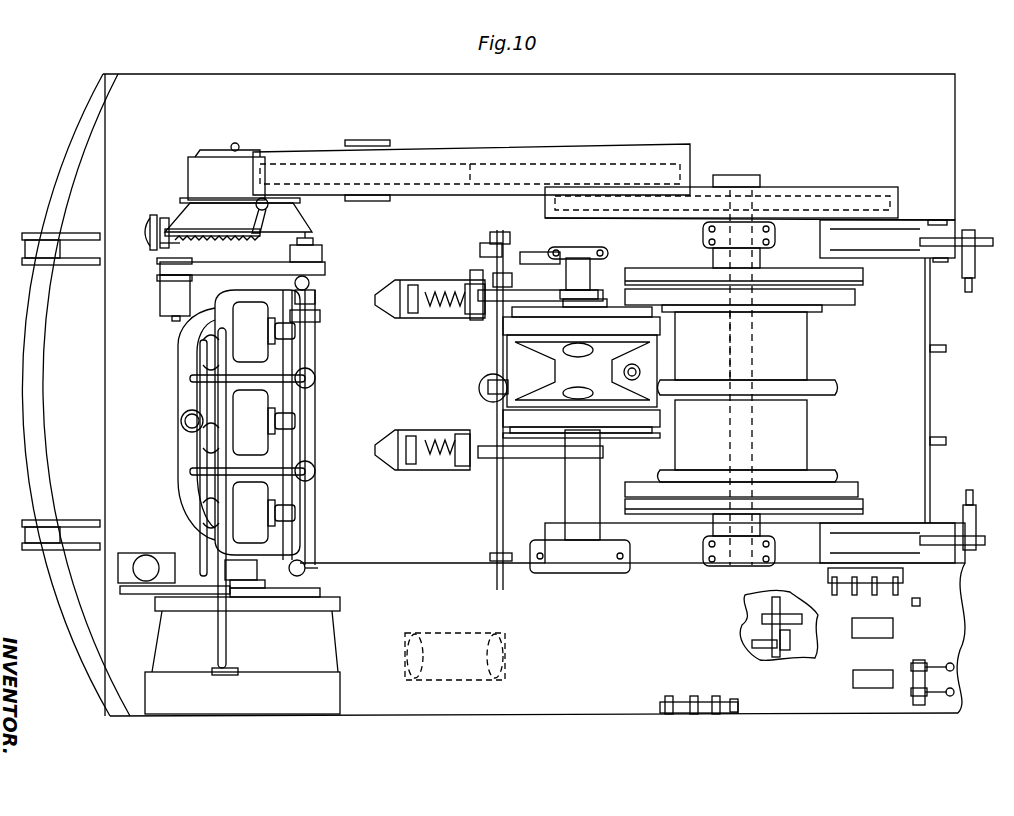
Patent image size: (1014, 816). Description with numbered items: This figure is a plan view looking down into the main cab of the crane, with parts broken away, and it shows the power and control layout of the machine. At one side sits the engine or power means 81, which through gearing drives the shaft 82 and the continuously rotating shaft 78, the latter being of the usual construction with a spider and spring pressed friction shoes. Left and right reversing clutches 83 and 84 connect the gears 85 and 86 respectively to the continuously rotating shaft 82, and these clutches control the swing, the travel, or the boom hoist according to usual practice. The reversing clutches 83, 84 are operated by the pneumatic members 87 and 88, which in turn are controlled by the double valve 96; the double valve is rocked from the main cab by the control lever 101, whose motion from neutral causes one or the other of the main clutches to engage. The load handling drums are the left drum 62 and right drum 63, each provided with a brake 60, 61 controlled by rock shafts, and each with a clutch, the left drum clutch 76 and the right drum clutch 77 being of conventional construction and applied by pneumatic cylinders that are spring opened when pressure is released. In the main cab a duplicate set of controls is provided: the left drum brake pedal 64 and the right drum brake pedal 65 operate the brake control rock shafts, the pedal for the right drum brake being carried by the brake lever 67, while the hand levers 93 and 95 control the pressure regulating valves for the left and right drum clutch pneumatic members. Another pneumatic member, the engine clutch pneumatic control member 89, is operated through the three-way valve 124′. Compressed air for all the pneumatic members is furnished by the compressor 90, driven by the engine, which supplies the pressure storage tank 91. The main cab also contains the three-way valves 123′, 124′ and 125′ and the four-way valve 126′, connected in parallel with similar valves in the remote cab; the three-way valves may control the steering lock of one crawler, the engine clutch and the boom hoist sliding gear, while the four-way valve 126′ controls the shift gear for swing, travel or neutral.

The brake 60 is at (856, 298).
The brake 61 is at (856, 484).
The left drum 62 is at (808, 352).
The right drum 63 is at (808, 436).
The left drum brake pedal 64 is at (868, 677).
The right drum brake pedal 65 is at (868, 632).
The brake lever 67 is at (812, 628).
The left drum clutch 76 is at (856, 273).
The right drum clutch 77 is at (860, 503).
The continuously rotating shaft 78 is at (752, 372).
The engine or power means 81 is at (174, 385).
The shaft 82 is at (586, 268).
The left reversing clutch 83 is at (606, 305).
The right reversing clutch 84 is at (626, 438).
The gear 85 is at (588, 357).
The gear 86 is at (570, 390).
The pneumatic member 87 is at (410, 285).
The pneumatic member 88 is at (403, 458).
The engine clutch pneumatic control member 89 is at (142, 224).
The compressor 90 is at (134, 546).
The pressure storage tank 91 is at (436, 632).
The hand lever 93 is at (952, 690).
The hand lever 95 is at (950, 663).
The double valve 96 is at (702, 695).
The control lever 101 is at (921, 603).
The three-way valve 123′ is at (900, 590).
The three-way valve 124′ is at (875, 592).
The three-way valve 125′ is at (850, 590).
The four-way valve 126′ is at (832, 590).